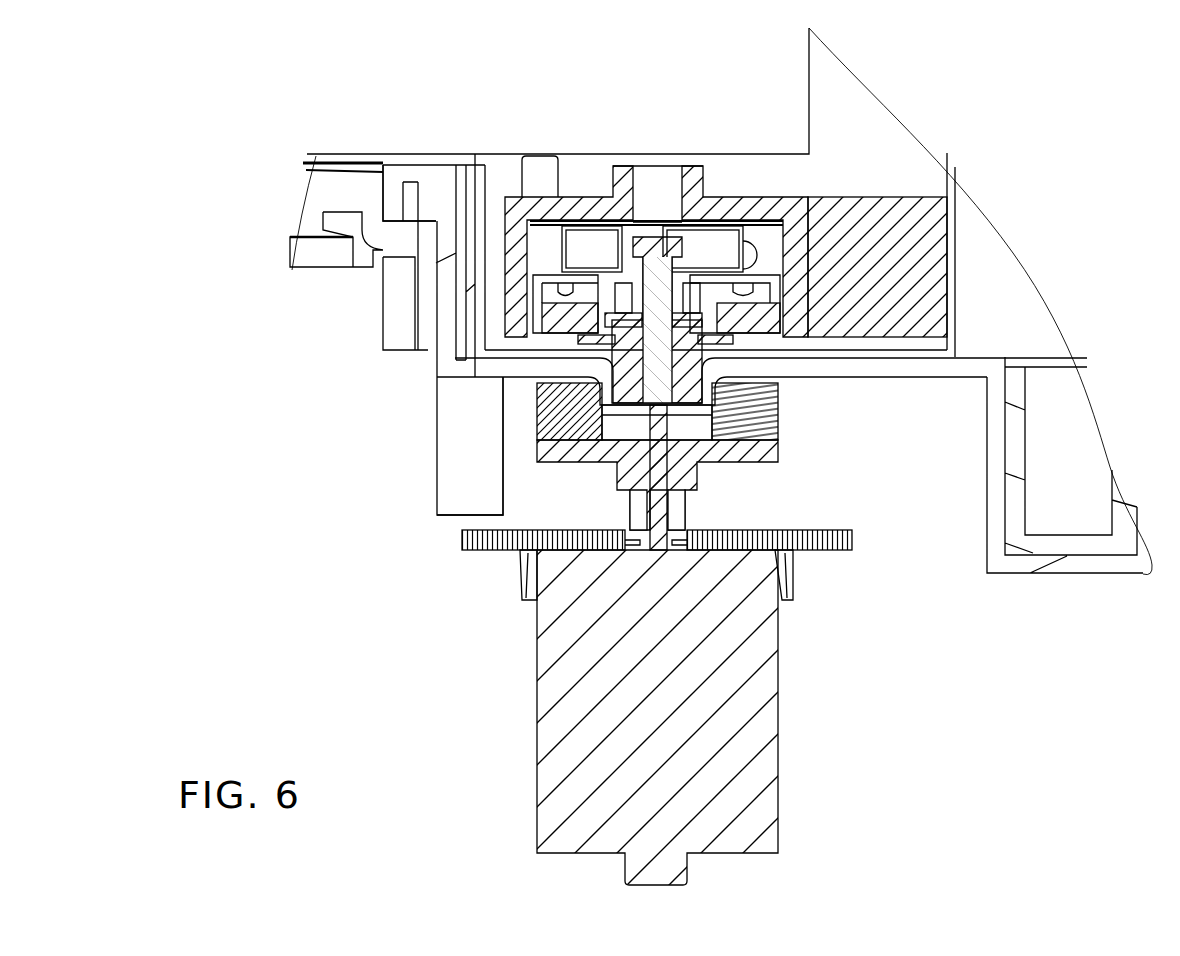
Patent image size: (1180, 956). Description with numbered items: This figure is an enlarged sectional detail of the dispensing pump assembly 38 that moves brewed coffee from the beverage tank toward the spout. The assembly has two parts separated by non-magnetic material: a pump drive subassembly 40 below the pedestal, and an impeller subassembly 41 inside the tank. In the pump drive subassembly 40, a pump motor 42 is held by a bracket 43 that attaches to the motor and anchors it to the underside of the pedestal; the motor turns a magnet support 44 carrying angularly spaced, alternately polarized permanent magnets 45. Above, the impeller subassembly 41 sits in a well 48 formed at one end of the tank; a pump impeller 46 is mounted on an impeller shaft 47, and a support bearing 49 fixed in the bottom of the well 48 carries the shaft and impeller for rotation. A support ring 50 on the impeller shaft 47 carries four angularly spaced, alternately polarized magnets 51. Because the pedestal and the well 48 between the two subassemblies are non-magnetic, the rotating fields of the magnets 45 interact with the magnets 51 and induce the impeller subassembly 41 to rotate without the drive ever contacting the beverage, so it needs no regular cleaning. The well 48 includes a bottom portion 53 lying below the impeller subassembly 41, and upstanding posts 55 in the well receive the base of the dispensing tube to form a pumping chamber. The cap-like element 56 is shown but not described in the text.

The dispensing pump assembly 38 is at (960, 86).
The pump drive subassembly 40 is at (413, 546).
The impeller subassembly 41 is at (772, 239).
The pump motor 42 is at (770, 710).
The bracket 43 is at (818, 553).
The magnet support 44 is at (758, 453).
The permanent magnets 45 is at (778, 422).
The pump impeller 46 is at (583, 243).
The impeller shaft 47 is at (662, 280).
The well 48 is at (540, 290).
The support bearing 49 is at (887, 353).
The support ring 50 is at (490, 266).
The magnets 51 is at (553, 323).
The bottom portion 53 is at (802, 316).
The upstanding posts 55 is at (537, 168).
The cap 56 is at (650, 170).